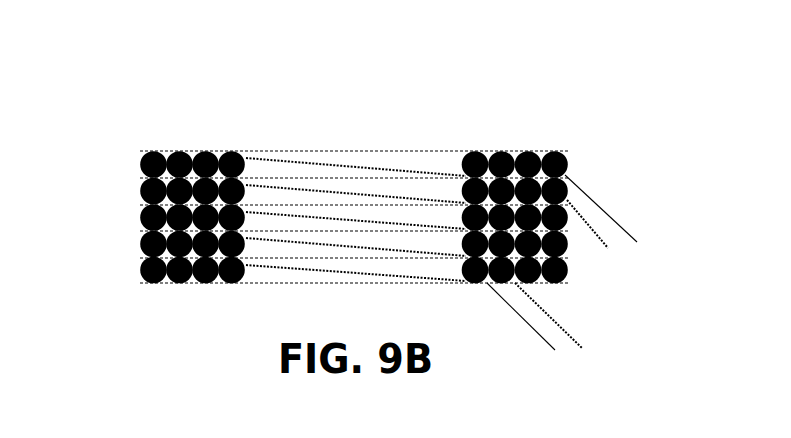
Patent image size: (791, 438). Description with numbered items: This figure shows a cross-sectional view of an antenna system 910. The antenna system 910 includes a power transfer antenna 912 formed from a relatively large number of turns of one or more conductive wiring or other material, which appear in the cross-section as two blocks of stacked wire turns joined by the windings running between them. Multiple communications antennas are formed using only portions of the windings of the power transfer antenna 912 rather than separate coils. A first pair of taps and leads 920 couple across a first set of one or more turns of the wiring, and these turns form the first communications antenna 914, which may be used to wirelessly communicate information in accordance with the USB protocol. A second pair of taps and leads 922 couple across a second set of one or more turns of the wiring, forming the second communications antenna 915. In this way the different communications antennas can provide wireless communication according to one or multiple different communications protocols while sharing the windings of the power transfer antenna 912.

The antenna system 910 is at (167, 108).
The power transfer antenna 912 is at (142, 192).
The first communications antenna 914 is at (625, 247).
The second communications antenna 915 is at (562, 352).
The first pair of taps and leads 920 is at (560, 177).
The second pair of taps and leads 922 is at (475, 279).